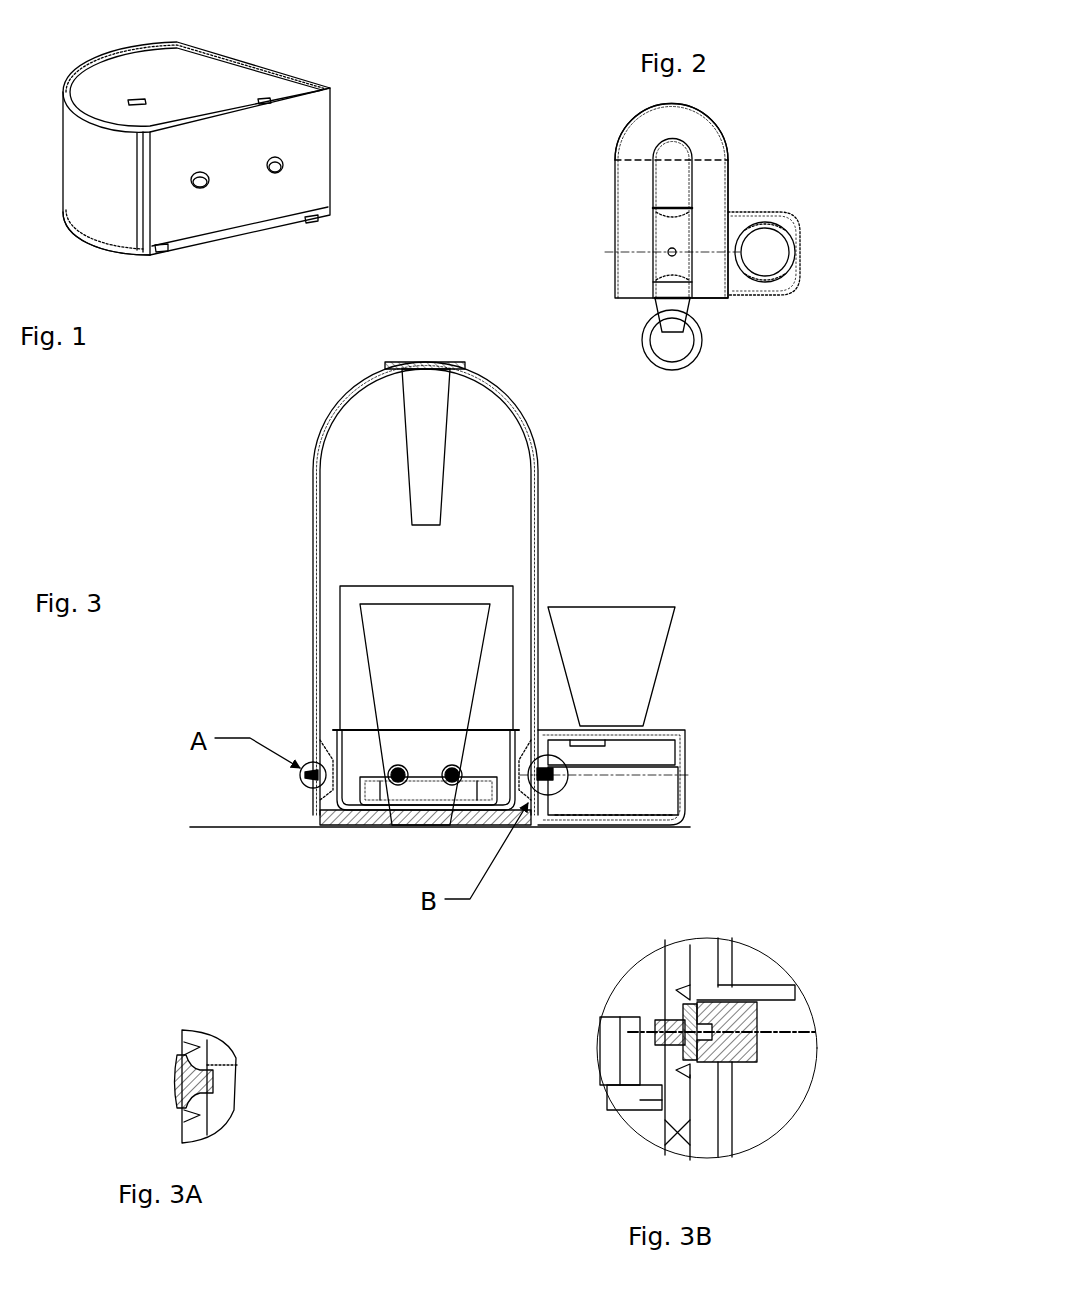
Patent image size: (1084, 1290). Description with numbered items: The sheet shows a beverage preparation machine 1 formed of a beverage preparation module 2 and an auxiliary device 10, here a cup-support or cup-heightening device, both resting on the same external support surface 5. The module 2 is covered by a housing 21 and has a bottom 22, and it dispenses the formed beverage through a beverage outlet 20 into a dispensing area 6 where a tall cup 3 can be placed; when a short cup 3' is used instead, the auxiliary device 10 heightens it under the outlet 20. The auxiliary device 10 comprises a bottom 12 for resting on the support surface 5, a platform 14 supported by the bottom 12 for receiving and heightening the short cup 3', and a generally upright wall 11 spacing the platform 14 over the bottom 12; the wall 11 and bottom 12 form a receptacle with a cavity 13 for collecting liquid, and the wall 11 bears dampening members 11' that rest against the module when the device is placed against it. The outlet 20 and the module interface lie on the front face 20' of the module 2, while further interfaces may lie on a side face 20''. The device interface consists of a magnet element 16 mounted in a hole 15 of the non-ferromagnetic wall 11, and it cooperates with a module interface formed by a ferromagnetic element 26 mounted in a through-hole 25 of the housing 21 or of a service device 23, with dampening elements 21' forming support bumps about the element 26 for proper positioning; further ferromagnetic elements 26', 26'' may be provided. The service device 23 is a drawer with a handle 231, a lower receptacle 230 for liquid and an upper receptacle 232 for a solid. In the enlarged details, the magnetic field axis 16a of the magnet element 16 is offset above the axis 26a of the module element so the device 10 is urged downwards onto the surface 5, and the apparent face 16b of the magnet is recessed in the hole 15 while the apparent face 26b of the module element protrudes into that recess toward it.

In FIG. 2, the beverage preparation machine 1 is at (566, 101).
In FIG. 2, the beverage preparation module 2 is at (630, 235).
In FIG. 3, the beverage preparation module 2 is at (298, 517).
In FIG. 2, the tall cup 3 is at (673, 358).
In FIG. 3, the tall cup 3 is at (421, 678).
In FIG. 2, the short cup 3' is at (783, 268).
In FIG. 3, the short cup 3' is at (630, 644).
In FIG. 3, the support surface 5 is at (226, 826).
In FIG. 3, the dispensing area 6 is at (441, 563).
In FIG. 1, the auxiliary device 10 is at (349, 58).
In FIG. 2, the auxiliary device 10 is at (767, 213).
In FIG. 3, the auxiliary device 10 is at (672, 694).
In FIG. 1, the upright wall 11 is at (97, 251).
In FIG. 3, the upright wall 11 is at (653, 777).
In FIG. 3B, the upright wall 11 is at (722, 1016).
In FIG. 1, the dampening members 11' is at (236, 263).
In FIG. 3, the bottom 12 is at (660, 822).
In FIG. 1, the cavity 13 is at (264, 76).
In FIG. 3, the cavity 13 is at (618, 791).
In FIG. 2, the platform 14 is at (748, 288).
In FIG. 3, the platform 14 is at (665, 730).
In FIG. 1, the hole 15 is at (209, 175).
In FIG. 3B, the hole 15 is at (733, 1057).
In FIG. 3, the magnet element 16 is at (549, 781).
In FIG. 3B, the magnet element 16 is at (742, 1013).
In FIG. 3B, the average magnetic field axis 16a is at (780, 1027).
In FIG. 3B, the apparent face 16b is at (699, 1042).
In FIG. 2, the beverage outlet 20 is at (662, 243).
In FIG. 3, the beverage outlet 20 is at (452, 447).
In FIG. 2, the first face 20' is at (697, 255).
In FIG. 3, the first face 20' is at (303, 431).
In FIG. 3, the second face 20'' is at (397, 518).
In FIG. 3, the housing 21 is at (381, 733).
In FIG. 3A, the housing 21 is at (248, 1090).
In FIG. 3B, the housing 21 is at (637, 1038).
In FIG. 3, the dampening elements 21' is at (438, 828).
In FIG. 3A, the dampening elements 21' is at (159, 1065).
In FIG. 3B, the dampening elements 21' is at (740, 1044).
In FIG. 3, the bottom 22 is at (328, 822).
In FIG. 3, the service device 23 is at (498, 617).
In FIG. 3A, the through-hole 25 is at (200, 1066).
In FIG. 3B, the through-hole 25 is at (680, 1020).
In FIG. 3, the ferromagnetic element 26 is at (425, 737).
In FIG. 3B, the ferromagnetic element 26' is at (606, 998).
In FIG. 3A, the ferromagnetic element 26'' is at (254, 1083).
In FIG. 3B, the average magnetic field axis 26a is at (635, 1035).
In FIG. 3A, the apparent face 26b is at (180, 1075).
In FIG. 3B, the apparent face 26b is at (690, 1040).
In FIG. 3, the first receptacle 230 is at (363, 740).
In FIG. 3, the handle 231 is at (383, 783).
In FIG. 3, the second receptacle 232 is at (350, 640).